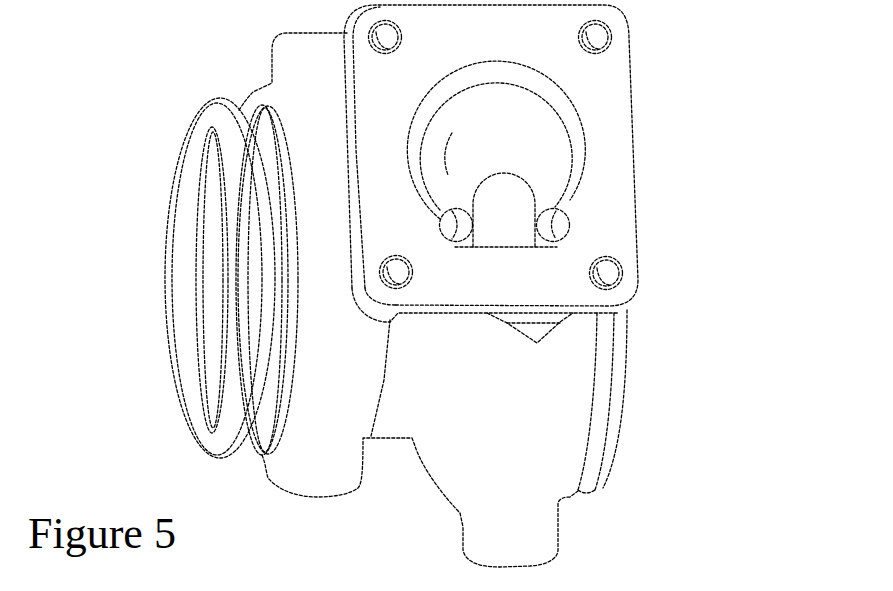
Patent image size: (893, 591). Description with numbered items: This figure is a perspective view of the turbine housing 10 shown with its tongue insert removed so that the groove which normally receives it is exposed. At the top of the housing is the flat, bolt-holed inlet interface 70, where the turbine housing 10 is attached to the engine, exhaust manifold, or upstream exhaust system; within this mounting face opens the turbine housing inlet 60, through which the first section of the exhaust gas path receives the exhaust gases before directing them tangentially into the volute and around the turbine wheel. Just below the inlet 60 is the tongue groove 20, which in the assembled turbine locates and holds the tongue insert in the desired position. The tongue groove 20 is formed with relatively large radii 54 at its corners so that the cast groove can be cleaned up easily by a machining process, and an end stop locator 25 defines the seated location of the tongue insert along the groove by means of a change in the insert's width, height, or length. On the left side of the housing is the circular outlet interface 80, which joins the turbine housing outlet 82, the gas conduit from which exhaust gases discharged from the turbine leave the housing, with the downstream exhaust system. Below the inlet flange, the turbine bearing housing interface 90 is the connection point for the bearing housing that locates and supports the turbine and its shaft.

The turbine housing 10 is at (778, 182).
The tongue groove 20 is at (574, 233).
The end stop locator 25 is at (543, 223).
The radii 54 is at (558, 237).
The turbine housing inlet 60 is at (527, 133).
The inlet interface 70 is at (368, 67).
The outlet interface 80 is at (205, 130).
The turbine housing outlet 82 is at (212, 283).
The turbine bearing housing interface 90 is at (627, 375).